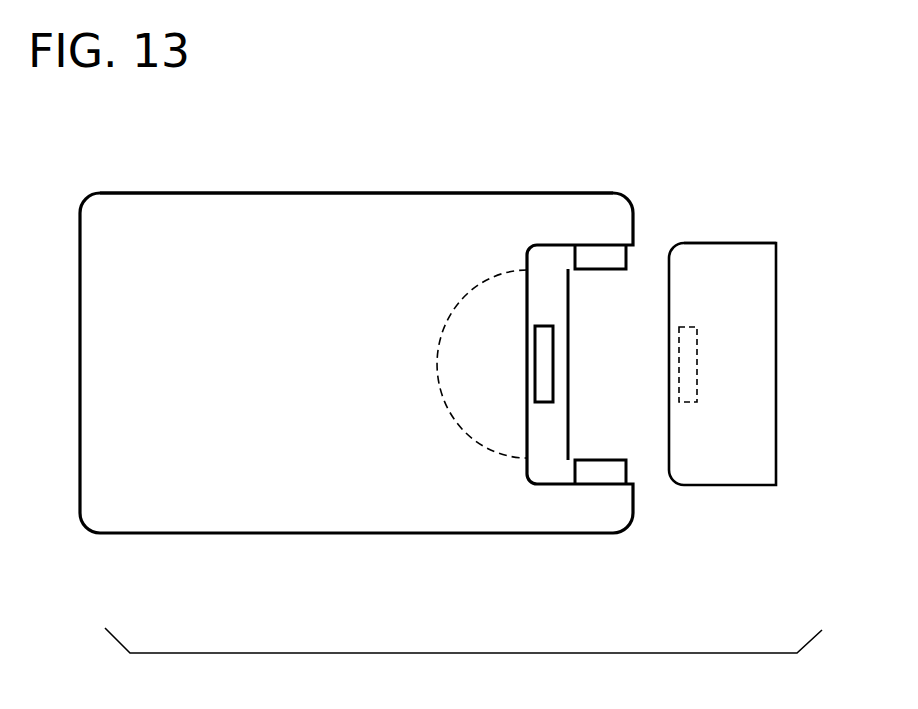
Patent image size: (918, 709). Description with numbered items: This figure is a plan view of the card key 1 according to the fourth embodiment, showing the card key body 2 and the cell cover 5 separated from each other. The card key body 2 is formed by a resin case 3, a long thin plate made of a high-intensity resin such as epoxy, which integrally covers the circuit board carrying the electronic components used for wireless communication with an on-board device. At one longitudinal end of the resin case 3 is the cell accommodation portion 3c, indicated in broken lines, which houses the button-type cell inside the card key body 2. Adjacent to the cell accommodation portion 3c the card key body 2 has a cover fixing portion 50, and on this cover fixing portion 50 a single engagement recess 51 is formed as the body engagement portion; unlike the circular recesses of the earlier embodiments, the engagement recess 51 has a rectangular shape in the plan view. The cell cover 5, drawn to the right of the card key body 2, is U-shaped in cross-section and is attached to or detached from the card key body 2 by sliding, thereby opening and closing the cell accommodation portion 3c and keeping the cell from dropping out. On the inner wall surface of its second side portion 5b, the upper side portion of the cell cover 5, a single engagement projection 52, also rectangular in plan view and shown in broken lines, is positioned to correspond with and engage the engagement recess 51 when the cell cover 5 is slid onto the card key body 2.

The card key 1 is at (702, 162).
The card key body 2 is at (220, 530).
The resin case 3 is at (233, 208).
The cell accommodation portion 3c is at (438, 390).
The cell cover 5 is at (766, 300).
The second side portion 5b is at (725, 255).
The cover fixing portion 50 is at (545, 262).
The engagement recess 51 is at (552, 367).
The engagement projection 52 is at (682, 402).